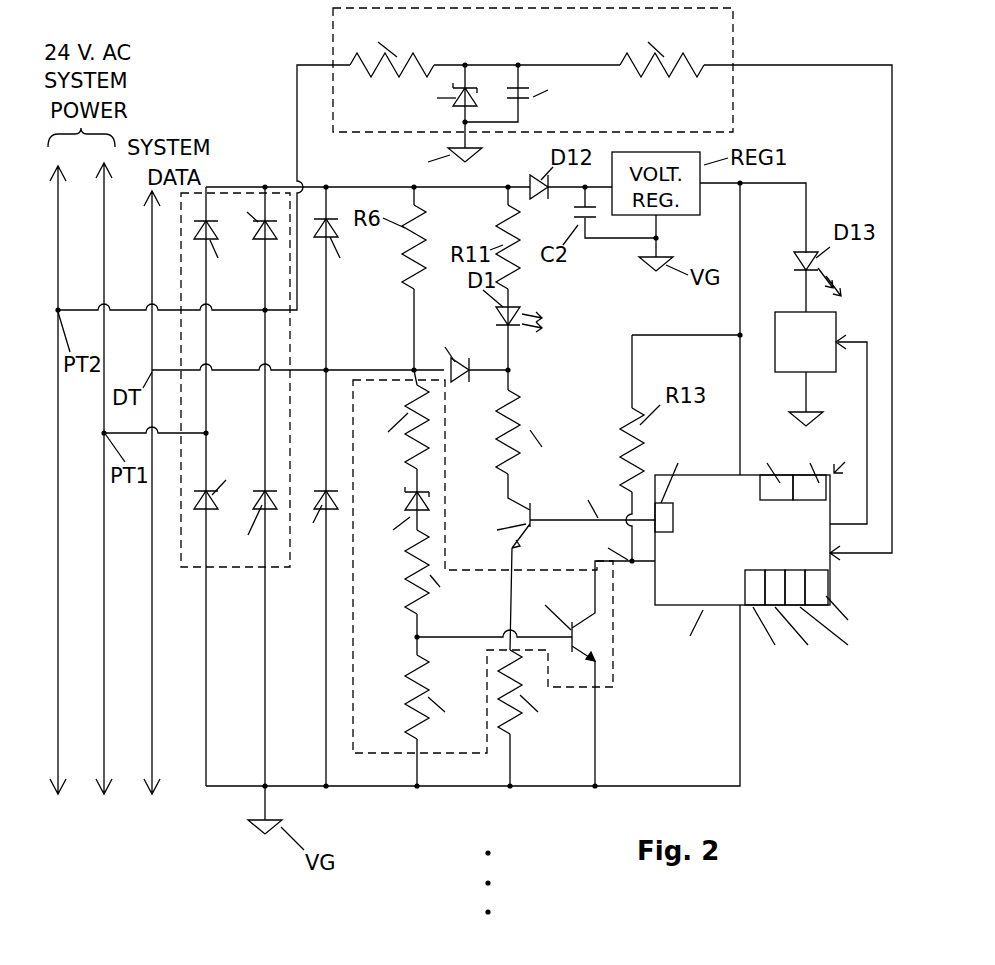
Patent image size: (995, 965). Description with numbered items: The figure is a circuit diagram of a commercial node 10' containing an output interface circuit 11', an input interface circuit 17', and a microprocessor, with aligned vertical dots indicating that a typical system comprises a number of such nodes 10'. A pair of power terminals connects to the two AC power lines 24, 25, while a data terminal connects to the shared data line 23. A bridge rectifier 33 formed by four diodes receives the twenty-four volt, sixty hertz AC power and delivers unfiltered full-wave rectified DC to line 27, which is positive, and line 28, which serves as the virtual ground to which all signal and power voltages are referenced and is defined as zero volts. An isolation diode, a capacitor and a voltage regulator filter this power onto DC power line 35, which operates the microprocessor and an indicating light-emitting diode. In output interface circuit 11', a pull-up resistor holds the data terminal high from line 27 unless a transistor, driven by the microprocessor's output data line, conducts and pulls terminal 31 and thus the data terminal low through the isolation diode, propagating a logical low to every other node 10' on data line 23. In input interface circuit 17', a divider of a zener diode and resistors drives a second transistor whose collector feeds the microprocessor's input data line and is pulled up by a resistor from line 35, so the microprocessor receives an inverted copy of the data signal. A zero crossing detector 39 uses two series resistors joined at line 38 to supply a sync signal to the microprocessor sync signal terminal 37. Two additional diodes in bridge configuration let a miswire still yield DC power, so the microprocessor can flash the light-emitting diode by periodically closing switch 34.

The node 10' is at (519, 697).
The output interface circuit 11' is at (537, 438).
The input interface circuit 17' is at (504, 576).
The data line 23 is at (155, 762).
The AC power line 24 is at (108, 762).
The AC power line 25 is at (62, 762).
The line 27 is at (330, 185).
The line 28 is at (530, 113).
The terminal 31 is at (512, 367).
The bridge rectifier 33 is at (274, 486).
The switch 34 is at (840, 323).
The DC power line 35 is at (742, 188).
The sync signal terminal 37 is at (835, 567).
The line 38 is at (521, 63).
The zero crossing detector 39 is at (612, 284).